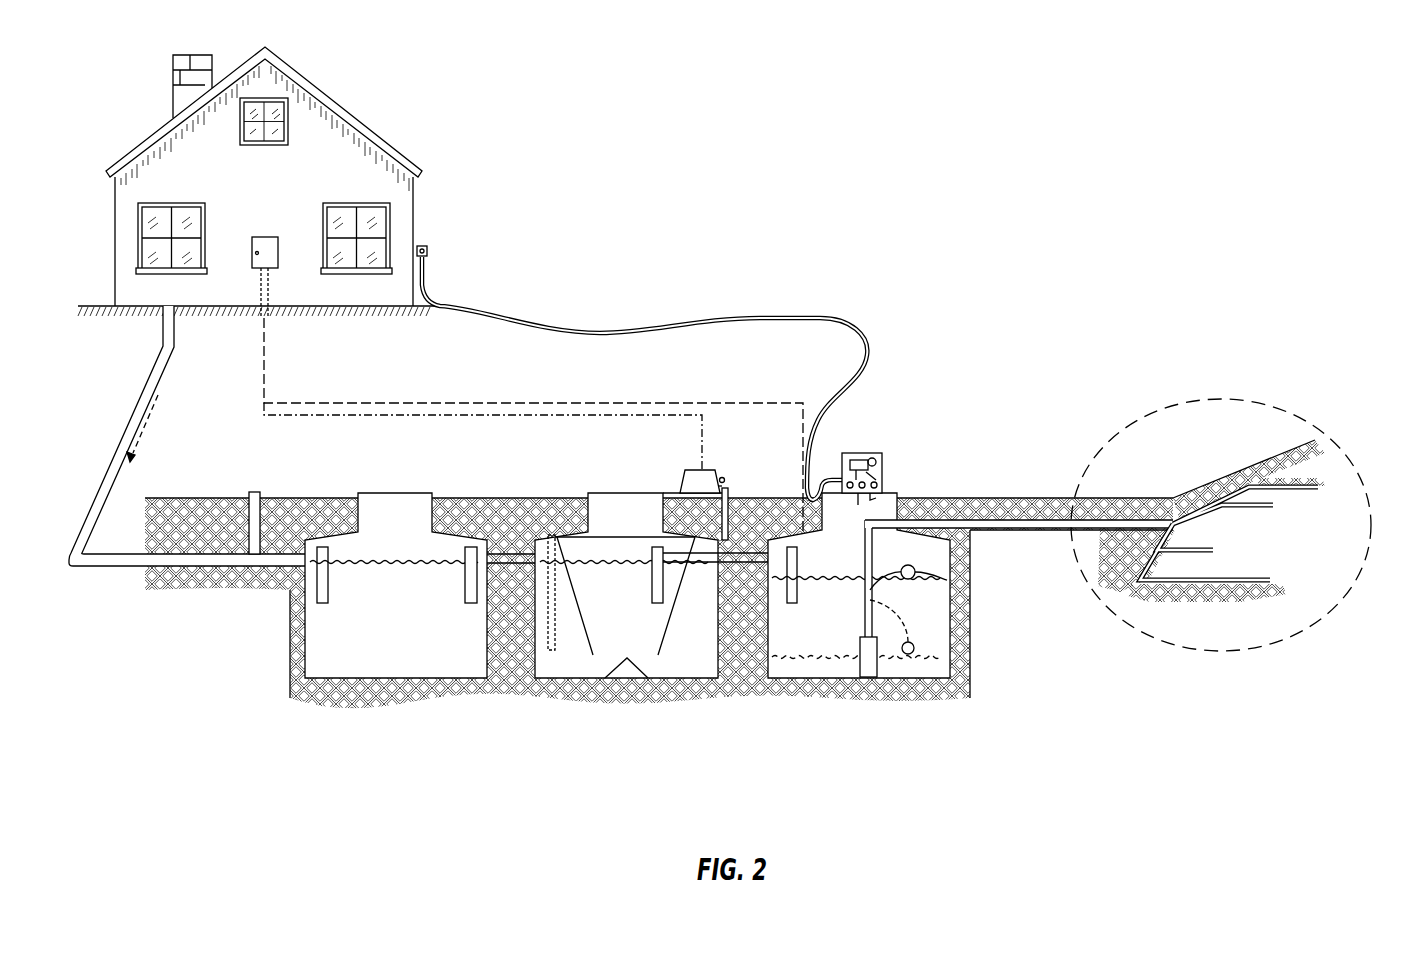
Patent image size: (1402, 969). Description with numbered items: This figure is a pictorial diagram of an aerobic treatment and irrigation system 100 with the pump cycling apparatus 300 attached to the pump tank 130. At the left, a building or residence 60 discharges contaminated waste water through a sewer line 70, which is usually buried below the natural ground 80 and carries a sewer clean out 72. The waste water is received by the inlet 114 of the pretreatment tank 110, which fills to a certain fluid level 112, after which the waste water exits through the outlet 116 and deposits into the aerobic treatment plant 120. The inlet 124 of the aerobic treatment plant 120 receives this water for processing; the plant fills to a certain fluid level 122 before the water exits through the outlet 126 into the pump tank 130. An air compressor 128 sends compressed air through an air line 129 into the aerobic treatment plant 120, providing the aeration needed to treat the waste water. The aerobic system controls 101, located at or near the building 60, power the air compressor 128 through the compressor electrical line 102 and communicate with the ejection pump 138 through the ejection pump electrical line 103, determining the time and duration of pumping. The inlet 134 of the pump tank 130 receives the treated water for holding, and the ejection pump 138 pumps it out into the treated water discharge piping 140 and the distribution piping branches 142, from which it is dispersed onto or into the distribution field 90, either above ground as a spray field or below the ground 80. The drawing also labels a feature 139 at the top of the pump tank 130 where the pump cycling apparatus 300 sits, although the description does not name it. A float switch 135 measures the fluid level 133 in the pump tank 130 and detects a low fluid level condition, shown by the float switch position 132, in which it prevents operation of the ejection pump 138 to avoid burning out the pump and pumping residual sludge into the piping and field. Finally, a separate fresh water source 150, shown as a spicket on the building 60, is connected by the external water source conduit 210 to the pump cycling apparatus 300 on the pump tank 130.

The building or residence 60 is at (281, 182).
The sewer line 70 is at (160, 375).
The sewer clean out 72 is at (255, 492).
The natural ground 80 is at (527, 500).
The distribution field 90 is at (1221, 509).
The aerobic treatment and irrigation system 100 is at (663, 644).
The aerobic system controls 101 is at (262, 238).
The compressor electrical line 102 is at (305, 415).
The ejection pump electrical line 103 is at (390, 402).
The pretreatment tank 110 is at (420, 622).
The fluid level 112 is at (400, 563).
The inlet 114 is at (330, 557).
The outlet 116 is at (467, 583).
The aerobic treatment plant 120 is at (659, 607).
The fluid level 122 is at (638, 560).
The inlet 124 is at (538, 547).
The outlet 126 is at (652, 577).
The air compressor 128 is at (680, 475).
The air line 129 is at (732, 488).
The pump tank 130 is at (899, 609).
The float switch position 132 is at (950, 632).
The fluid level 133 is at (832, 578).
The inlet 134 is at (797, 592).
The float switch 135 is at (947, 578).
The ejection pump 138 is at (877, 663).
The pump tank riser 139 is at (890, 493).
The treated water discharge piping 140 is at (1005, 523).
The distribution piping branches 142 is at (1197, 513).
The fresh water source 150 is at (425, 250).
The external water source conduit 210 is at (693, 322).
The pump cycling apparatus 300 is at (888, 443).